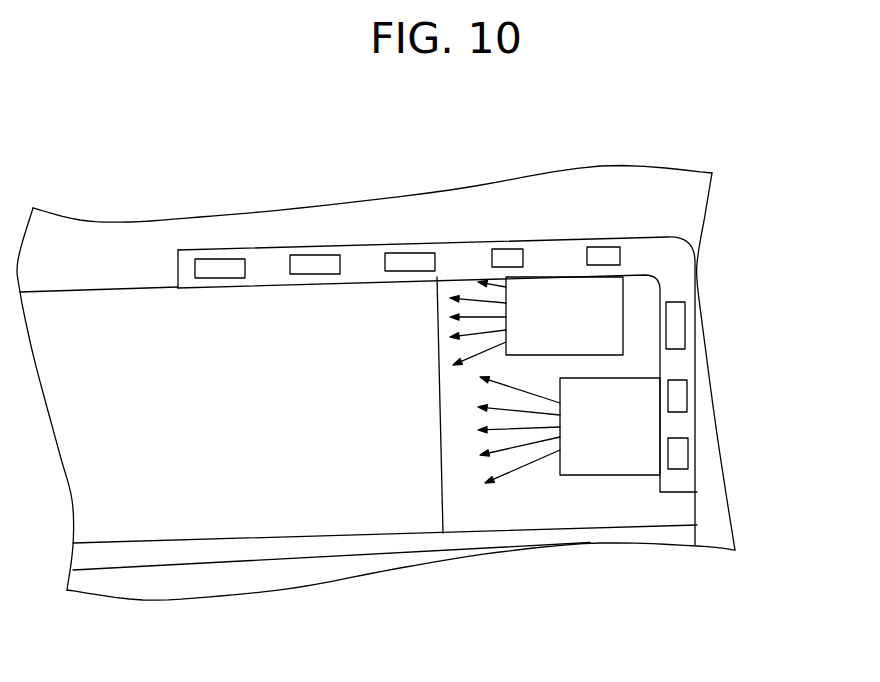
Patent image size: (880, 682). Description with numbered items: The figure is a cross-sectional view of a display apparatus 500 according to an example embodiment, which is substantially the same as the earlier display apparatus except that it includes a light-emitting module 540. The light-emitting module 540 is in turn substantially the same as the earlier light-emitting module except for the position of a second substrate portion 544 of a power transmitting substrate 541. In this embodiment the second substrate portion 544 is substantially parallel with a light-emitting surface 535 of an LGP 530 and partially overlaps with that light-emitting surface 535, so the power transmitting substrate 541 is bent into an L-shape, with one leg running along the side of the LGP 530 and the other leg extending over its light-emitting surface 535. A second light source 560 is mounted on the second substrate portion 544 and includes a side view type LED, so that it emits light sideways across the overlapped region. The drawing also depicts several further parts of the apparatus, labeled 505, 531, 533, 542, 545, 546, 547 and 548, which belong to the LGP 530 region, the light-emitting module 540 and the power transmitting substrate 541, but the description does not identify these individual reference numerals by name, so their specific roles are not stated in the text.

The display apparatus 500 is at (404, 125).
The lower substrate 505 is at (167, 562).
The LGP 530 is at (385, 462).
The boundary of display area 531 is at (443, 498).
The bottom edge of display area 533 is at (370, 537).
The light-emitting surface 535 is at (145, 286).
The light-emitting module 540 is at (512, 391).
The power transmitting substrate 541 is at (695, 267).
The sensor 542 is at (678, 358).
The second substrate portion 544 is at (353, 256).
The sensor 545 is at (682, 395).
The sensor 546 is at (731, 453).
The light emitting unit 547 is at (510, 253).
The light emitting unit 548 is at (593, 249).
The second light source 560 is at (612, 300).